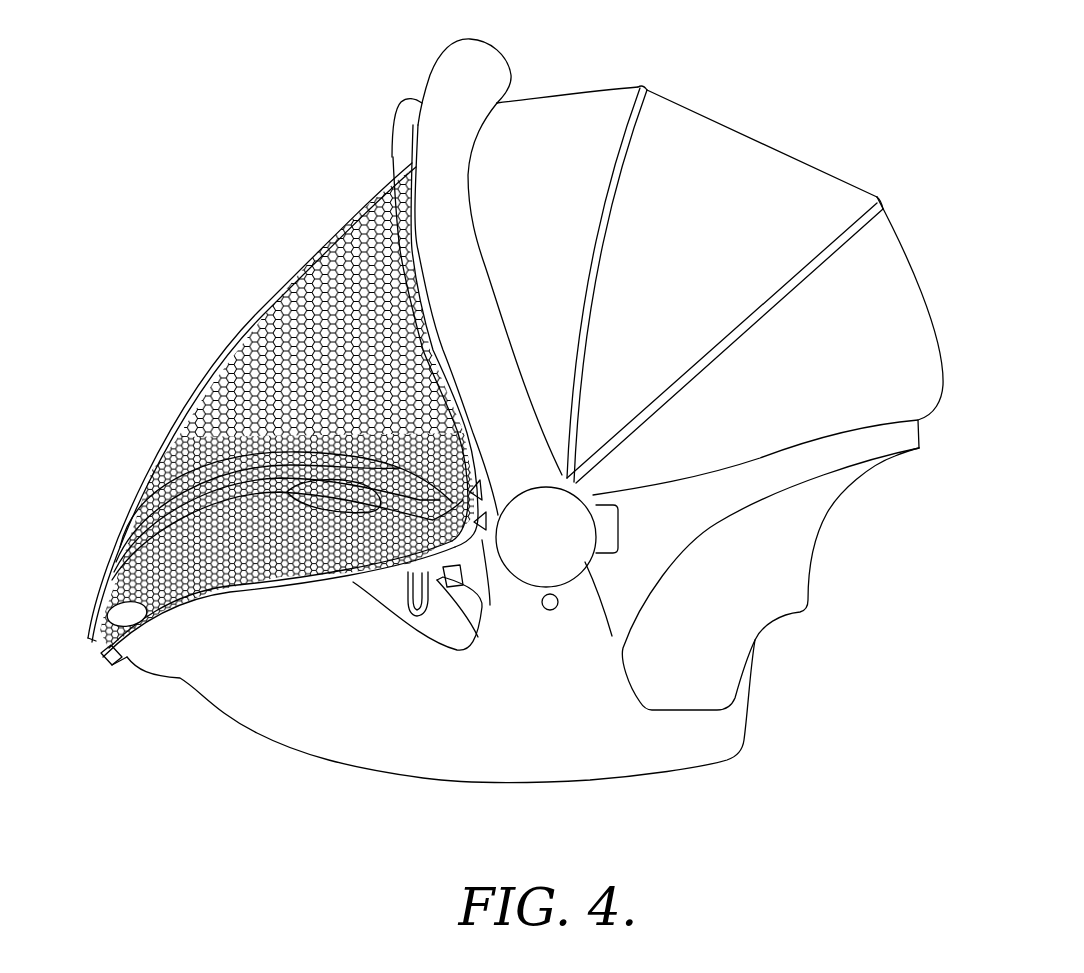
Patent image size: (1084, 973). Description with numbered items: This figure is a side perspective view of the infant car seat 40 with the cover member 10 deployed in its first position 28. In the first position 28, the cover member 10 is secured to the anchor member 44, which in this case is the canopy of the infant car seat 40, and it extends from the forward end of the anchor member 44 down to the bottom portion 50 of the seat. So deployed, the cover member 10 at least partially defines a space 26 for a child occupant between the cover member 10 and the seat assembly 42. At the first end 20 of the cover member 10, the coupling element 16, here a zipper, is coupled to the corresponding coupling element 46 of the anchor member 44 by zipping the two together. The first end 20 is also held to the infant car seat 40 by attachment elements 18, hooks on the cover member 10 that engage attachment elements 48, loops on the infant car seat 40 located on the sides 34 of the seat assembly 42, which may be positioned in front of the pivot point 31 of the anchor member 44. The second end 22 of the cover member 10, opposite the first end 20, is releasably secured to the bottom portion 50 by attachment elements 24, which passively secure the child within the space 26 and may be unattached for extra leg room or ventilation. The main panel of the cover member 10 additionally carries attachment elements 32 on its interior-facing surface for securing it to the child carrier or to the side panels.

The cover member 10 is at (243, 257).
The coupling element 16 is at (412, 261).
The attachment elements 18 is at (472, 625).
The first end 20 is at (478, 266).
The second end 22 is at (108, 667).
The attachment elements 24 is at (117, 613).
The space 26 is at (178, 455).
The first position 28 is at (178, 298).
The pivot point 31 is at (588, 557).
The attachment elements 32 is at (127, 563).
The first side 34 is at (213, 420).
The infant car seat 40 is at (926, 251).
The seat assembly 42 is at (245, 538).
The anchor member 44 is at (583, 105).
The coupling element 46 is at (412, 261).
The attachment elements 48 is at (426, 620).
The bottom portion 50 is at (102, 662).